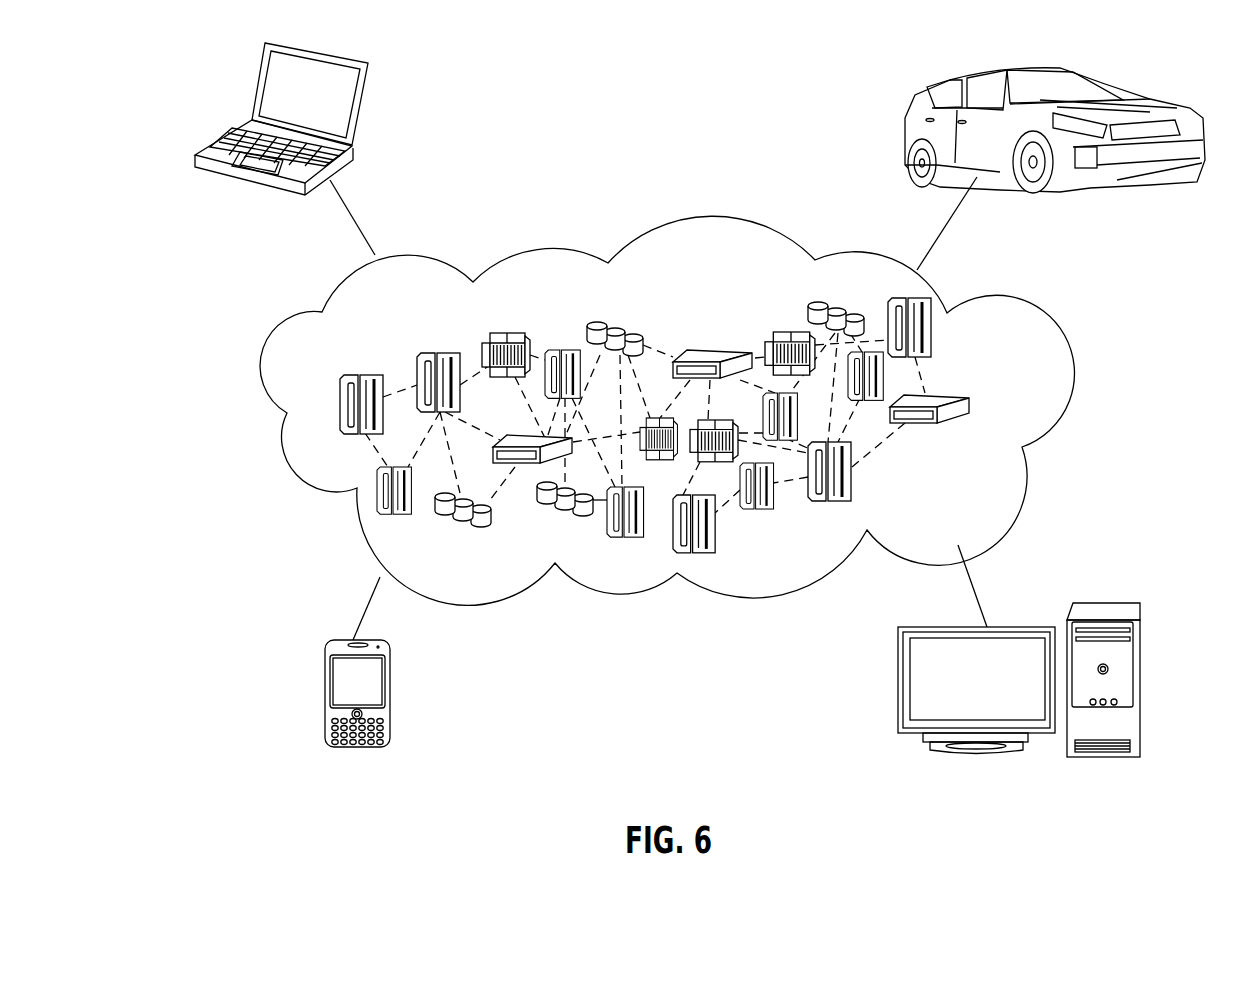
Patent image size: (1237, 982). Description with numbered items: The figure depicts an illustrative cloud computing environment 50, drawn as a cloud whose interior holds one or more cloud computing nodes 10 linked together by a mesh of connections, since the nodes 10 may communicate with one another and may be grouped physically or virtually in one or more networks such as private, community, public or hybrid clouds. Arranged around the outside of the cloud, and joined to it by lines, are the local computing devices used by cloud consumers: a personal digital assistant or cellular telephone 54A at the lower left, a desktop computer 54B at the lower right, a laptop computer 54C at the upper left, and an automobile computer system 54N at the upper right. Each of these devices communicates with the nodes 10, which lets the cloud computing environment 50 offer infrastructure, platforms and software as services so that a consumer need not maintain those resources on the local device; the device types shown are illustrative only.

The cloud computing node 10 is at (1012, 405).
The cloud computing environment 50 is at (1030, 323).
The personal digital assistant (PDA) or cellular telephone 54A is at (327, 695).
The desktop computer 54B is at (1107, 603).
The laptop computer 54C is at (362, 107).
The automobile computer system 54N is at (910, 112).